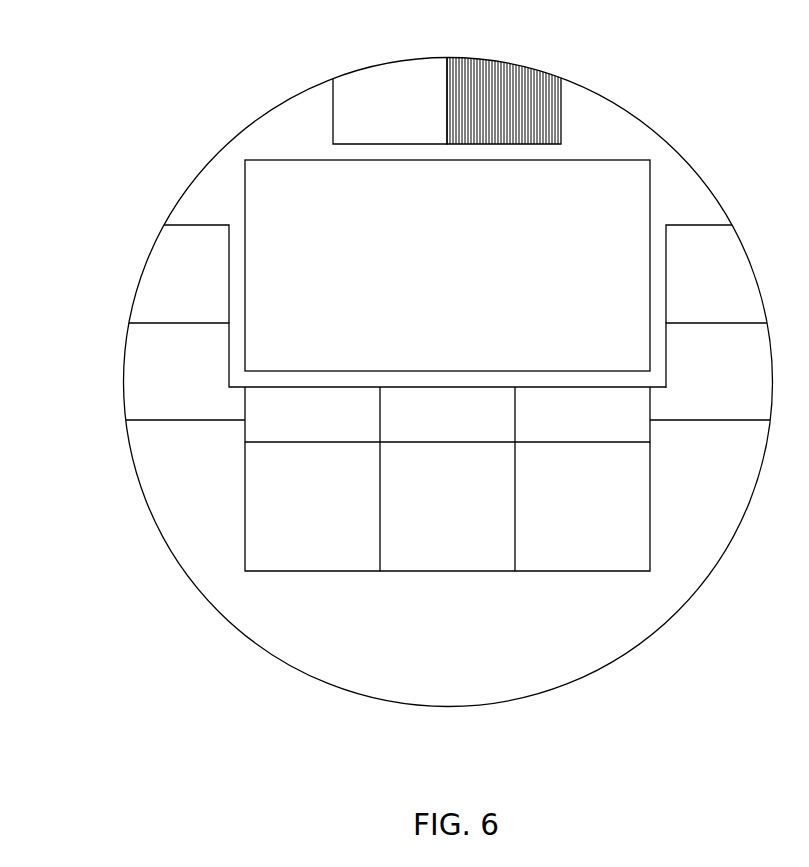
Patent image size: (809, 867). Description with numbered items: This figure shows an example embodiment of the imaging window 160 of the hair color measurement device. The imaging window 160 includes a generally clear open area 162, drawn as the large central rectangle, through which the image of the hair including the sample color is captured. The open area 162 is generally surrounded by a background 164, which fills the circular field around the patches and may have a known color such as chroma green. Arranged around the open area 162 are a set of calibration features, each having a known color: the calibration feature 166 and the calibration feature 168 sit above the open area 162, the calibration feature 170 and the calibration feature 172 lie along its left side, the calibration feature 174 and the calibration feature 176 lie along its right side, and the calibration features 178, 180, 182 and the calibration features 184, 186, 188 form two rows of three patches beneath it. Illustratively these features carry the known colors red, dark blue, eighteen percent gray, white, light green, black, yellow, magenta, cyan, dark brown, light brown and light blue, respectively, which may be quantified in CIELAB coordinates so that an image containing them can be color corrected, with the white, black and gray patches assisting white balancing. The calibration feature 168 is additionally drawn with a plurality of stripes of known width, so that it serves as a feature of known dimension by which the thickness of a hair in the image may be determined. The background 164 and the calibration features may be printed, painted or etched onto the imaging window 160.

The imaging window 160 is at (93, 24).
The open area 162 is at (465, 218).
The background 164 is at (285, 143).
The calibration feature 166 is at (390, 101).
The calibration feature 168 is at (504, 99).
The calibration feature 170 is at (196, 274).
The calibration feature 172 is at (396, 371).
The calibration feature 174 is at (699, 274).
The calibration feature 176 is at (710, 371).
The calibration feature 178 is at (312, 414).
The calibration feature 180 is at (447, 421).
The calibration feature 182 is at (582, 414).
The calibration feature 184 is at (312, 506).
The calibration feature 186 is at (447, 535).
The calibration feature 188 is at (582, 506).